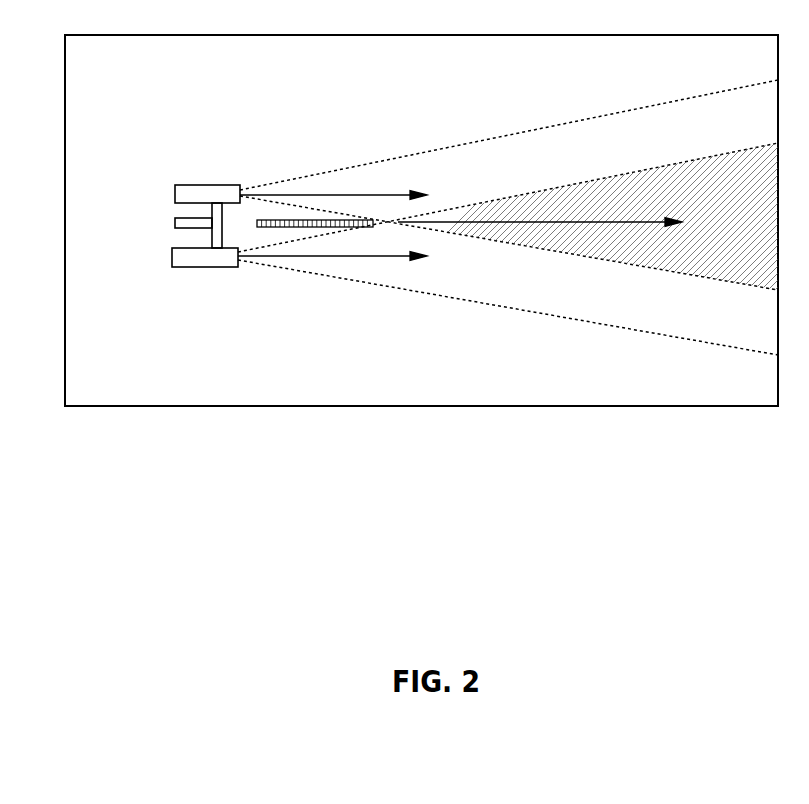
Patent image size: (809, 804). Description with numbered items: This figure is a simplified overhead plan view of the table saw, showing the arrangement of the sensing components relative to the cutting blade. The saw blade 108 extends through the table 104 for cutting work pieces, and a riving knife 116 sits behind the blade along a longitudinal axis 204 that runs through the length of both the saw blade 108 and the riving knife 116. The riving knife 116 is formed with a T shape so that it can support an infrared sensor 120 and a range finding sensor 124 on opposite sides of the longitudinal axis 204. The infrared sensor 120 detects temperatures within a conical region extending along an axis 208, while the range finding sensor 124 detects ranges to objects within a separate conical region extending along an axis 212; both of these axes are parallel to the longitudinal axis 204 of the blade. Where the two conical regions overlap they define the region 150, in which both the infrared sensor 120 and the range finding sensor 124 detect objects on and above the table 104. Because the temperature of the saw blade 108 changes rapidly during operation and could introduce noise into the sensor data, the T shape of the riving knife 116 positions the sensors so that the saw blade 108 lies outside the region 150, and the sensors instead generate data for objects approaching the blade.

The table 104 is at (236, 34).
The saw blade 108 is at (295, 227).
The riving knife 116 is at (192, 227).
The infrared sensor 120 is at (222, 185).
The range finding sensor 124 is at (213, 267).
The region 150 is at (672, 165).
The longitudinal axis 204 is at (503, 223).
The axis 208 is at (328, 195).
The axis 212 is at (315, 257).